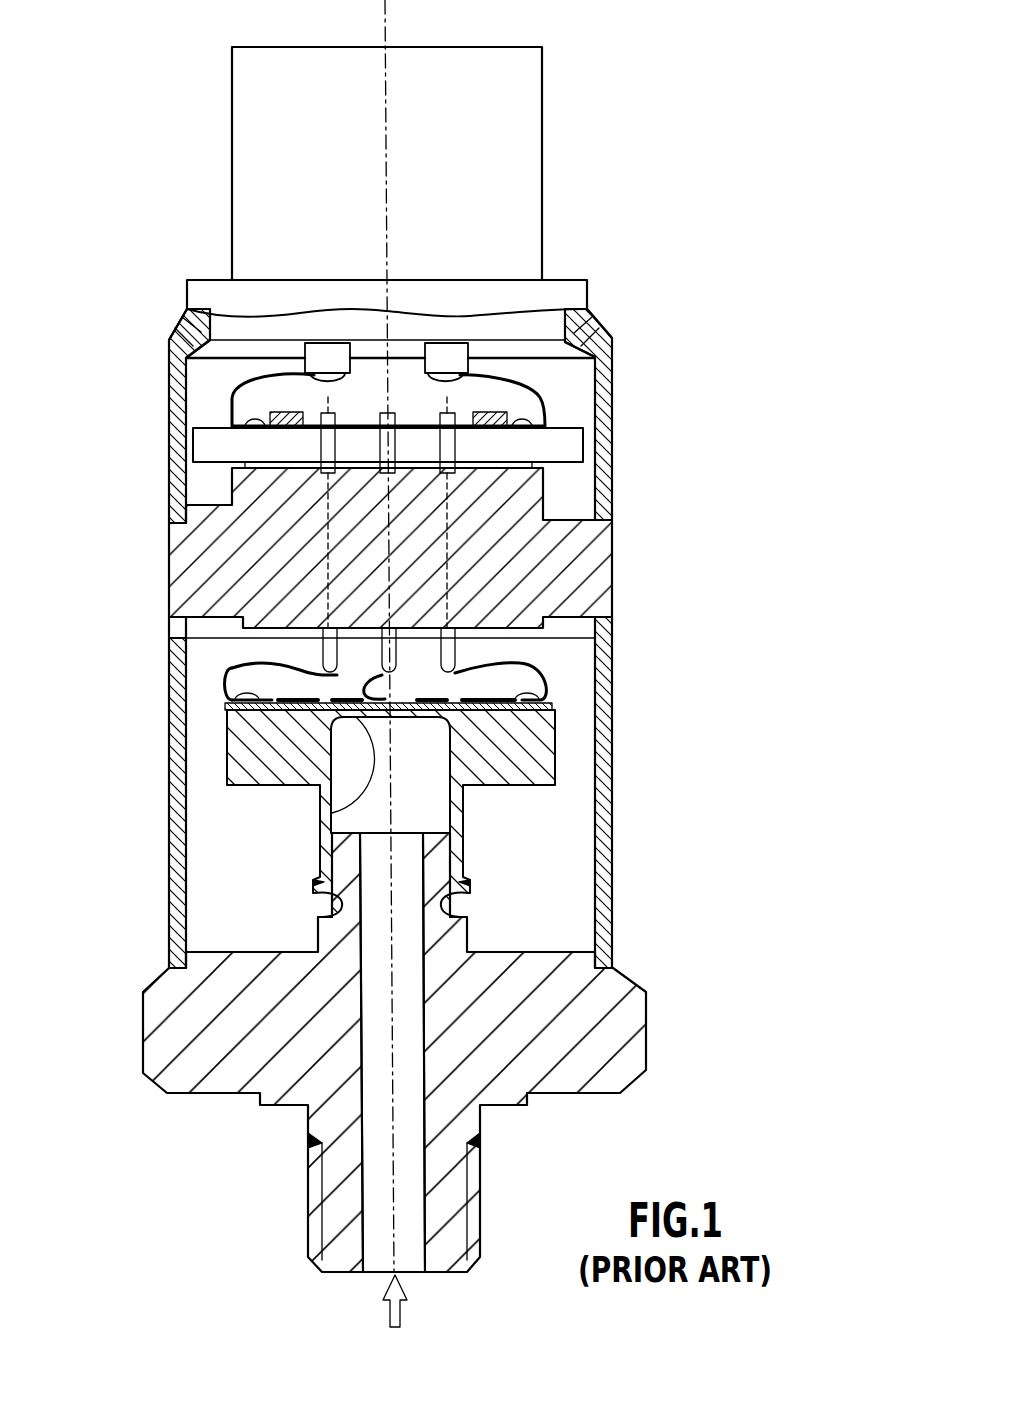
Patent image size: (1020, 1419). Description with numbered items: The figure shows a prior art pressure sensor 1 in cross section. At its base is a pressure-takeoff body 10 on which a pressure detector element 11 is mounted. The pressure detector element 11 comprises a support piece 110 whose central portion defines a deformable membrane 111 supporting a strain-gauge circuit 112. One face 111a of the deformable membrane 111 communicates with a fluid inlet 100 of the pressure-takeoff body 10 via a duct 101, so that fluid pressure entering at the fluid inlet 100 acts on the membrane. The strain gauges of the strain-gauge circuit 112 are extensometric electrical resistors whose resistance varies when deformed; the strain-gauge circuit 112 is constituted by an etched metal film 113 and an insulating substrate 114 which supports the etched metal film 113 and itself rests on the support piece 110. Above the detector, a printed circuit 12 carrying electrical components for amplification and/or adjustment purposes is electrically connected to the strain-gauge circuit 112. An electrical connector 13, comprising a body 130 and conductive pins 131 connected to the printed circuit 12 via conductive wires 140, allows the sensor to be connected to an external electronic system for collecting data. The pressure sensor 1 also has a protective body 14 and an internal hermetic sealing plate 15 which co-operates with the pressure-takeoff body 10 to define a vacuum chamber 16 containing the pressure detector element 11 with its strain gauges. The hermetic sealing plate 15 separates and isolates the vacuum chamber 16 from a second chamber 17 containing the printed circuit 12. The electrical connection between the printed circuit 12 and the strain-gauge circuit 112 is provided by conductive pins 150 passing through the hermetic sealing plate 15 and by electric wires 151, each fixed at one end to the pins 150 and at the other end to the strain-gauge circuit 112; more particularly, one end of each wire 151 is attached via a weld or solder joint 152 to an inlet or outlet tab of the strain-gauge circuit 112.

The pressure sensor 1 is at (652, 111).
The electrical connector 13 is at (543, 102).
The body 130 is at (530, 182).
The conductive pins 131 is at (448, 352).
The conductive wires 140 is at (527, 393).
The second chamber 17 is at (202, 398).
The printed circuit 12 is at (570, 443).
The conductive pins 150 is at (443, 463).
The internal hermetic sealing plate 15 is at (180, 571).
The strain-gauge circuit 112 is at (577, 628).
The electric wires 151 is at (232, 665).
The etched metal film 113 is at (526, 683).
The deformable membrane 111 is at (385, 690).
The insulating substrate 114 is at (522, 688).
The weld or solder joint 152 is at (235, 690).
The vacuum chamber 16 is at (206, 680).
The support piece 110 is at (547, 729).
The pressure detector element 11 is at (568, 768).
The face 111a is at (331, 819).
The protective body 14 is at (180, 816).
The pressure-takeoff body 10 is at (646, 1026).
The duct 101 is at (395, 1190).
The fluid inlet 100 is at (418, 1275).